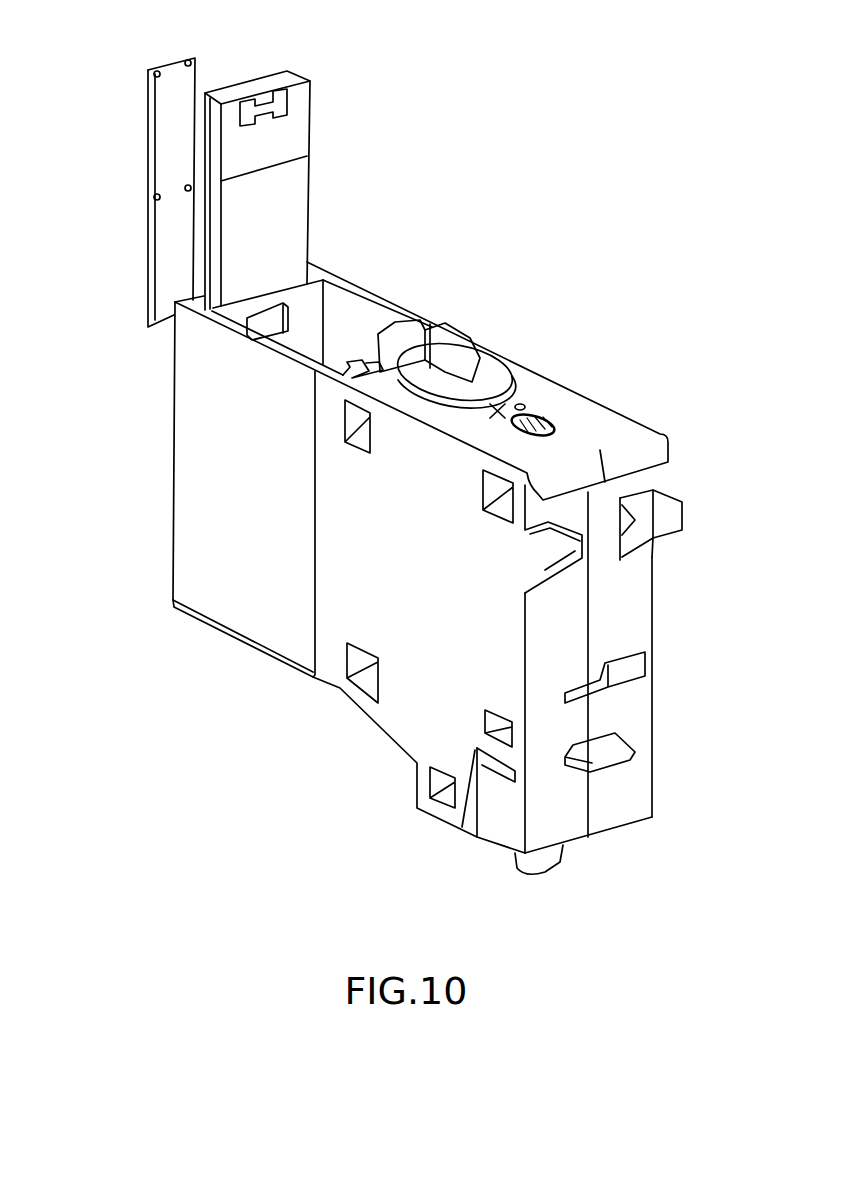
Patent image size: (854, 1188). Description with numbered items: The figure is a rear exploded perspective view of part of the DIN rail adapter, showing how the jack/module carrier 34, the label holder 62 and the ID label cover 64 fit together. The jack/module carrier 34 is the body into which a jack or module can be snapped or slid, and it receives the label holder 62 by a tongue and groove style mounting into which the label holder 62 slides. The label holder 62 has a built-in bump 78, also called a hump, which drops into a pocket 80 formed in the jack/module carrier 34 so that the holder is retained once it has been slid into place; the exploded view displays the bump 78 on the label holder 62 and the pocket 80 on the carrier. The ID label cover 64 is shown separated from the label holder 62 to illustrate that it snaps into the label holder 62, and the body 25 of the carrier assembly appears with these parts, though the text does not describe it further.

The housing 25 is at (653, 612).
The front wall 34 is at (244, 572).
The panel 62 is at (305, 190).
The cover panel 64 is at (163, 228).
The opening 78 is at (282, 118).
The tab 80 is at (274, 323).